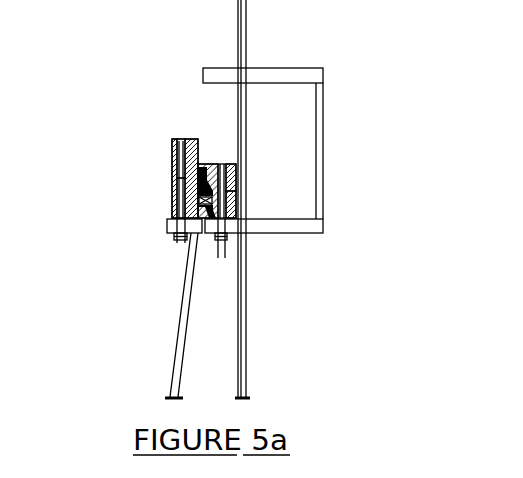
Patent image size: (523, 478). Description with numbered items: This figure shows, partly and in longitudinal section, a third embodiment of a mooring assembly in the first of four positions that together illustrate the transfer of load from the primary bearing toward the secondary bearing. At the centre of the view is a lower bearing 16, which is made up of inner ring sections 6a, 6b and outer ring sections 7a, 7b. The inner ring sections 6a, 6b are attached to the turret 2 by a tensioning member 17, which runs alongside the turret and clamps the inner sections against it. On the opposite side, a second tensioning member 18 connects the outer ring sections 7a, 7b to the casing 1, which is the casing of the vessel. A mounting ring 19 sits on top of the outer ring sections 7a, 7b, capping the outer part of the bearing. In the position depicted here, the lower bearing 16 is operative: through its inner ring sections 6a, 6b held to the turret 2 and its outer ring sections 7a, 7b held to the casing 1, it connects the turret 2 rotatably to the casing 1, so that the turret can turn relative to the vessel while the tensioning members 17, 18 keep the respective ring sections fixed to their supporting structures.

The casing 1 is at (167, 366).
The turret 2 is at (248, 365).
The inner ring section 6a is at (232, 175).
The inner ring section 6b is at (233, 206).
The outer ring section 7a is at (176, 177).
The outer ring section 7b is at (178, 197).
The lower bearing 16 is at (209, 156).
The tensioning member 17 is at (242, 235).
The tensioning member 18 is at (172, 242).
The mounting ring 19 is at (172, 146).